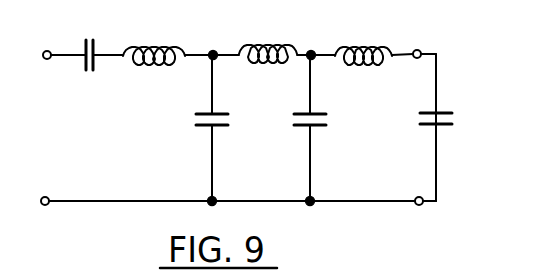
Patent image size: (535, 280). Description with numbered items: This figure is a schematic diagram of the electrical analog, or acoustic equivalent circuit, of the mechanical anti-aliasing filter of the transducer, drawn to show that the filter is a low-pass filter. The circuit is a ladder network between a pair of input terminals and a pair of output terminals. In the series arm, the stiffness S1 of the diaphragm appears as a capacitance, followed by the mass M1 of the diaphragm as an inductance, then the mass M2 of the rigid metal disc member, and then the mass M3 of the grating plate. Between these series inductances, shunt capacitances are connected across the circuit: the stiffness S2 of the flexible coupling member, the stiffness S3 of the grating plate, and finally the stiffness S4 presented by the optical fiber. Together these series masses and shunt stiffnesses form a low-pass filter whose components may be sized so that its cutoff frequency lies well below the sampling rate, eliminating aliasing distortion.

The stiffness of the diaphragm S1 is at (87, 43).
The stiffness of the member S2 is at (200, 128).
The stiffness of the grating plate S3 is at (300, 128).
The stiffness of the optical fiber S4 is at (428, 128).
The mass of the diaphragm M1 is at (181, 47).
The mass of the member M2 is at (291, 45).
The mass of the grating plate M3 is at (388, 48).